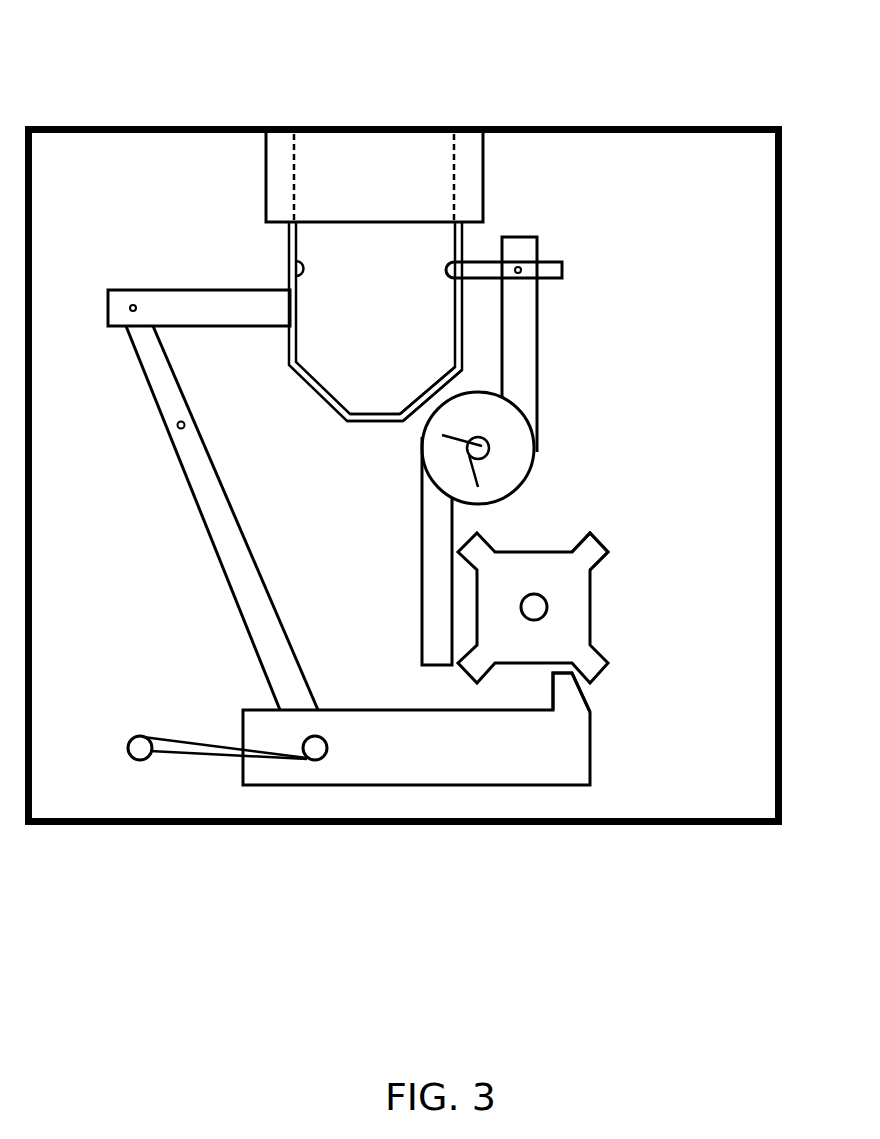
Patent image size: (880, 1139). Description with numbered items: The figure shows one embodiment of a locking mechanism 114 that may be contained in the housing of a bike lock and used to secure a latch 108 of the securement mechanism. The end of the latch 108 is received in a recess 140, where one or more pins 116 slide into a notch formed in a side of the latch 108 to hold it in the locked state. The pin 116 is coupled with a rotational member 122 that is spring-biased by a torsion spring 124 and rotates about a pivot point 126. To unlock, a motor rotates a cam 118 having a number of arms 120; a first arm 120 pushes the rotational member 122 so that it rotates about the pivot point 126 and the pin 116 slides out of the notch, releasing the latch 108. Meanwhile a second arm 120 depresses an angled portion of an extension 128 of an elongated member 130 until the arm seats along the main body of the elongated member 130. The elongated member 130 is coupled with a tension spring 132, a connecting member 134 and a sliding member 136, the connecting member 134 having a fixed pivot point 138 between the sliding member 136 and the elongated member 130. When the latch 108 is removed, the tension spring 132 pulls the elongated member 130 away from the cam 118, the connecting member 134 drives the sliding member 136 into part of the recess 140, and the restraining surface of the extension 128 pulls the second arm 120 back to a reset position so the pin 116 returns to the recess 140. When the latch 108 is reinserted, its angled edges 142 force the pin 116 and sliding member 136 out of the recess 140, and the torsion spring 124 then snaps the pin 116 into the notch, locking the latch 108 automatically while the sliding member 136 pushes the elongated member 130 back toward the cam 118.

The locking mechanism 114 is at (715, 126).
The latch 108 is at (327, 242).
The angled edges 142 is at (442, 388).
The recess 140 is at (348, 424).
The sliding member 136 is at (192, 290).
The pivot point 138 is at (170, 428).
The connecting member 134 is at (234, 600).
The pin 116 is at (563, 267).
The rotational member 122 is at (421, 548).
The torsion spring 124 is at (490, 448).
The pivot point 126 is at (468, 450).
The cam 118 is at (592, 594).
The arms 120 is at (602, 553).
The elongated member 130 is at (425, 709).
The extension 128 is at (588, 690).
The tension spring 132 is at (185, 745).